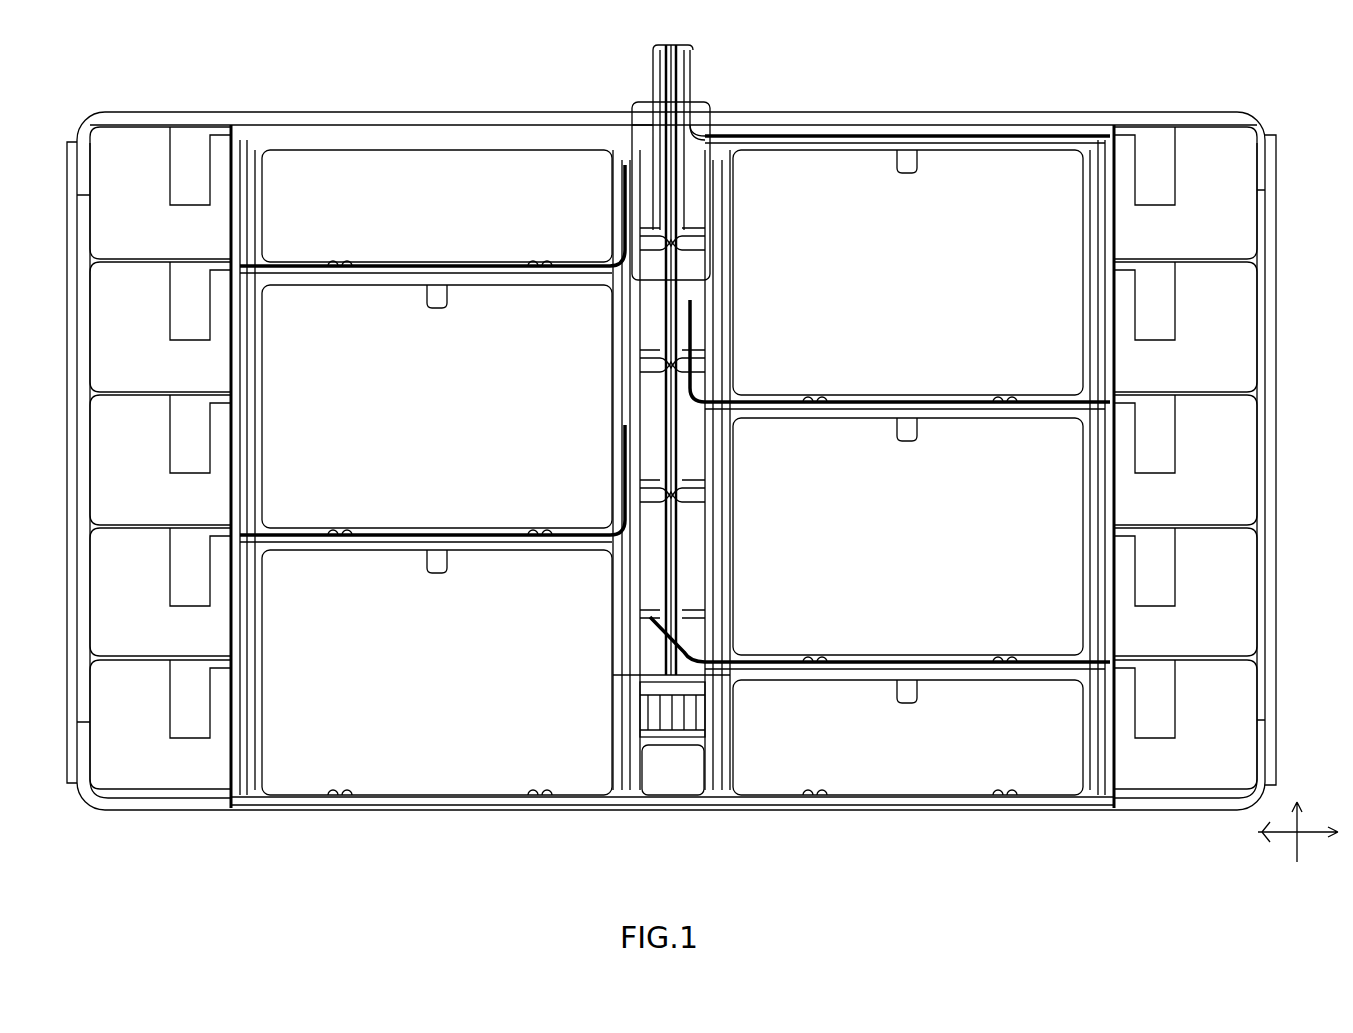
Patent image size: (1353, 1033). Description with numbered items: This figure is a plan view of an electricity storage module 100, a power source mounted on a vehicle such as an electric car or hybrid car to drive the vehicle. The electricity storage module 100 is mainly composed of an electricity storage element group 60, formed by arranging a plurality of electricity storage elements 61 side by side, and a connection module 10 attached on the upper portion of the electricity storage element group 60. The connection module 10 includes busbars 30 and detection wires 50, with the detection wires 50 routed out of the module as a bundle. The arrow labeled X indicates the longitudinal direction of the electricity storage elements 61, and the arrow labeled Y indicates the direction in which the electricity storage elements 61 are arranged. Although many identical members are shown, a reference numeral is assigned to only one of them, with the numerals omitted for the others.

The electricity storage module 100 is at (1192, 855).
The connection module 10 is at (552, 818).
The busbar 30 is at (818, 190).
The detection wire 50 is at (655, 76).
The electricity storage element group 60 is at (1283, 228).
The electricity storage element 61 is at (1230, 185).